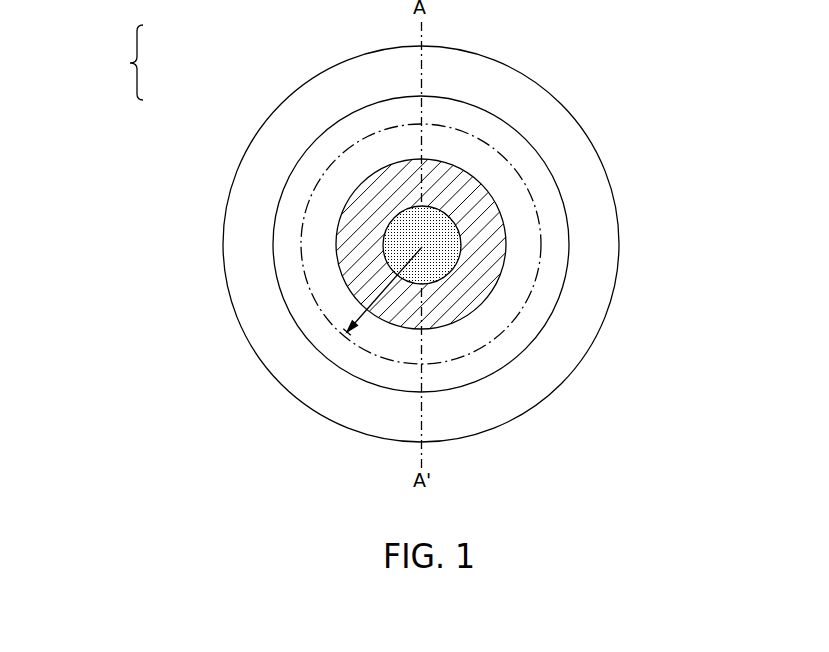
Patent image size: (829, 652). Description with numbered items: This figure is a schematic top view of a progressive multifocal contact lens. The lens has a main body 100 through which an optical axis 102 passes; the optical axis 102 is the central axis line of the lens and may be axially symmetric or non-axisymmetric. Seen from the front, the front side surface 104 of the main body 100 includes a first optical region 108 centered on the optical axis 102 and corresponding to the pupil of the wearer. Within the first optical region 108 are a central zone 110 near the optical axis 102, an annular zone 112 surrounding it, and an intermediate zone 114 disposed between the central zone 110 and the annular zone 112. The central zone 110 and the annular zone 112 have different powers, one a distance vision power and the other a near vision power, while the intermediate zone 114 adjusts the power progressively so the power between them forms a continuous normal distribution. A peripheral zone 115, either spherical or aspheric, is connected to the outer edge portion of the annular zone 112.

The main body 100 is at (617, 270).
The optical axis 102 is at (422, 247).
The front side surface 104 is at (520, 102).
The first optical region 108 is at (138, 64).
The central zone 110 is at (403, 235).
The annular zone 112 is at (287, 212).
The intermediate zone 114 is at (492, 245).
The peripheral zone 115 is at (583, 173).